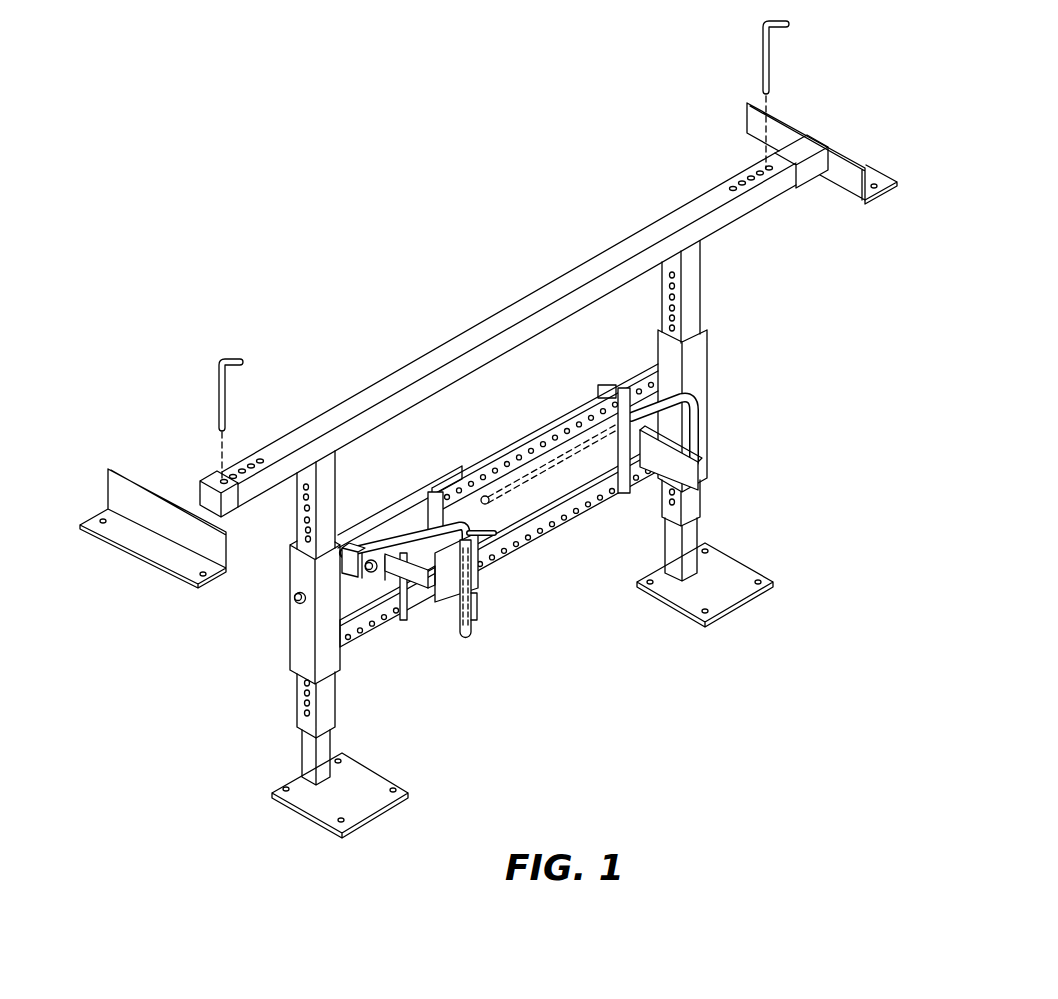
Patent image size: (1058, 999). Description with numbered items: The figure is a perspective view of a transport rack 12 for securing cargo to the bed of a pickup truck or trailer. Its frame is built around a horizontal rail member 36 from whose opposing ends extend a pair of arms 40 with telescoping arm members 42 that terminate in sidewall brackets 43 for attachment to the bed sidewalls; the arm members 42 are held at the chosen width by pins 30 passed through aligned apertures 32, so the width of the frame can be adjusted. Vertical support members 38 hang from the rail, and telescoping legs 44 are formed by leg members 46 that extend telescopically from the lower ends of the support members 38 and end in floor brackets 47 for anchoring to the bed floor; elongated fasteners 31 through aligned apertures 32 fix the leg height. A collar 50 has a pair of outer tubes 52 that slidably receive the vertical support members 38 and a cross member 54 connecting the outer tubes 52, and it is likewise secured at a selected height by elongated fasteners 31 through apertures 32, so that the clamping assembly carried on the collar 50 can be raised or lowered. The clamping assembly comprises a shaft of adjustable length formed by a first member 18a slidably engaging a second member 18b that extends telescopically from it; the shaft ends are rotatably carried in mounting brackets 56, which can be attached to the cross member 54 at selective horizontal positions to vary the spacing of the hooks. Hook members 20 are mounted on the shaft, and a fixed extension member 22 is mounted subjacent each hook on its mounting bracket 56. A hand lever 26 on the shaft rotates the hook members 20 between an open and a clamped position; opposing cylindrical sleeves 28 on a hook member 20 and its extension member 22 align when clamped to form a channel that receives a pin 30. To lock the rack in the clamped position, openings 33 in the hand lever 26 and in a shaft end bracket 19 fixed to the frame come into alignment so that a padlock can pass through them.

The transport rack 12 is at (348, 280).
The first member 18a is at (469, 544).
The second member 18b is at (558, 493).
The shaft end bracket 19 is at (638, 395).
The hook members 20 is at (683, 435).
The fixed extension member 22 is at (683, 470).
The hand lever 26 is at (417, 583).
The cylindrical sleeves 28 is at (468, 580).
The pin 30 is at (764, 52).
The elongated fasteners 31 is at (288, 598).
The apertures 32 is at (733, 190).
The openings 33 is at (393, 573).
The rail member 36 is at (477, 337).
The vertical support members 38 is at (330, 715).
The arms 40 is at (856, 146).
The telescoping arm members 42 is at (812, 175).
The sidewall brackets 43 is at (893, 185).
The telescoping legs 44 is at (510, 684).
The leg member 46 is at (315, 767).
The floor brackets 47 is at (362, 803).
The collar 50 is at (508, 484).
The outer tubes 52 is at (293, 660).
The cross member 54 is at (537, 428).
The mounting brackets 56 is at (640, 480).